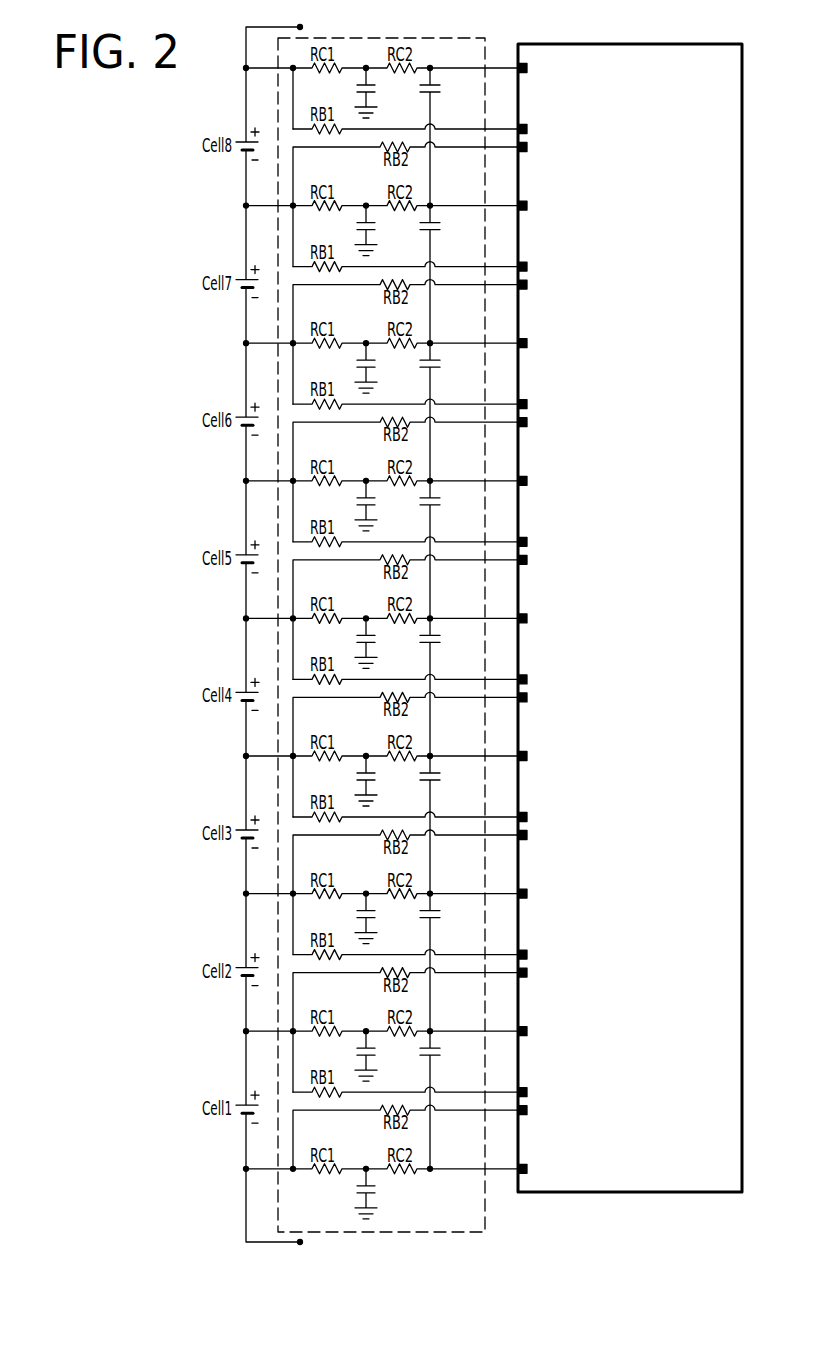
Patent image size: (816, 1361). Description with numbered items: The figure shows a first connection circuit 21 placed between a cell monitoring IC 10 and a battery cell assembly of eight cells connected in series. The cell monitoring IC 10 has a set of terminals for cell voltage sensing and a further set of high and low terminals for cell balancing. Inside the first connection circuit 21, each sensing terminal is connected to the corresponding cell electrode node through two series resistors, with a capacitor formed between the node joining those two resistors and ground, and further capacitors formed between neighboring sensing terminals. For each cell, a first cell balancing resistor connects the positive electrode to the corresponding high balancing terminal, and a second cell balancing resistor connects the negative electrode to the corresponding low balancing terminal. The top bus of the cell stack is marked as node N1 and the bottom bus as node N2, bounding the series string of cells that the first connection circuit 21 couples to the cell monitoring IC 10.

The cell monitoring IC 10 is at (605, 43).
The first connection circuit 21 is at (452, 1232).
The first node (positive terminal of cell stack) N1 is at (277, 35).
The second node (negative terminal of cell stack) N2 is at (278, 1218).